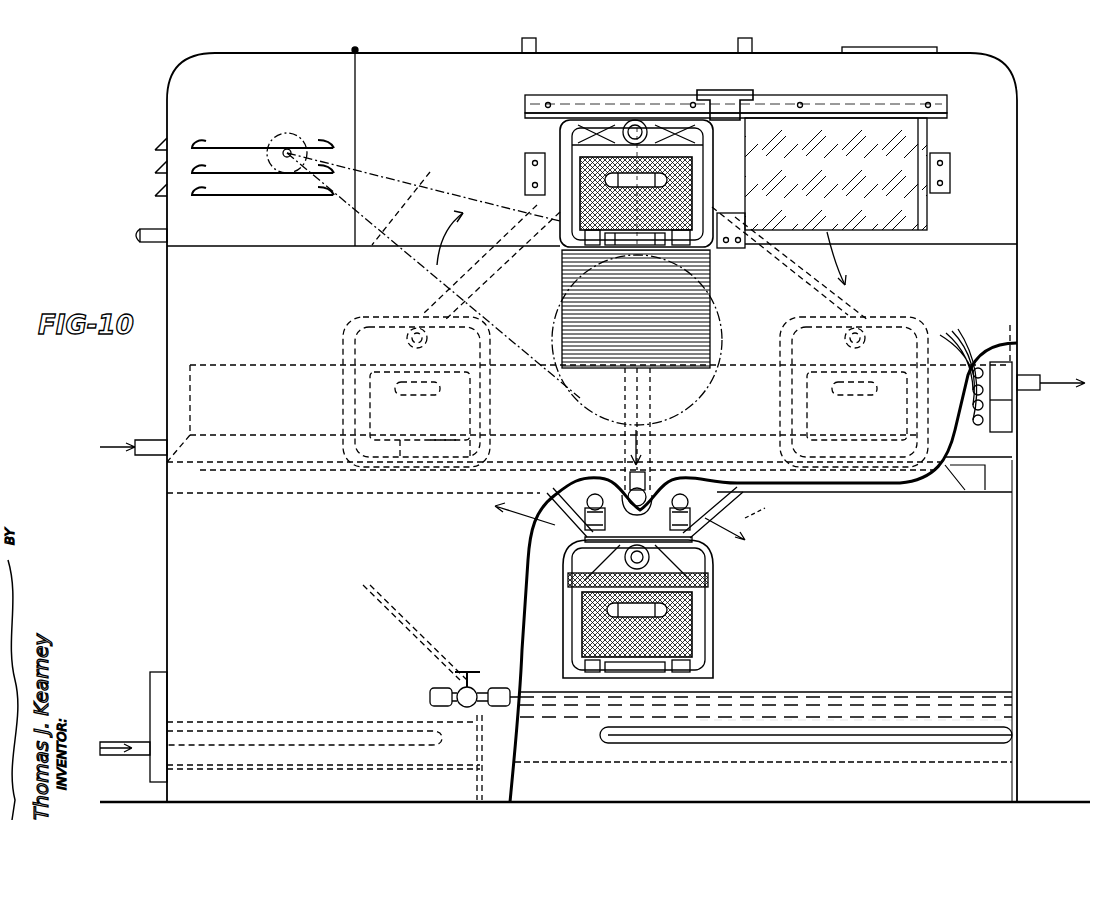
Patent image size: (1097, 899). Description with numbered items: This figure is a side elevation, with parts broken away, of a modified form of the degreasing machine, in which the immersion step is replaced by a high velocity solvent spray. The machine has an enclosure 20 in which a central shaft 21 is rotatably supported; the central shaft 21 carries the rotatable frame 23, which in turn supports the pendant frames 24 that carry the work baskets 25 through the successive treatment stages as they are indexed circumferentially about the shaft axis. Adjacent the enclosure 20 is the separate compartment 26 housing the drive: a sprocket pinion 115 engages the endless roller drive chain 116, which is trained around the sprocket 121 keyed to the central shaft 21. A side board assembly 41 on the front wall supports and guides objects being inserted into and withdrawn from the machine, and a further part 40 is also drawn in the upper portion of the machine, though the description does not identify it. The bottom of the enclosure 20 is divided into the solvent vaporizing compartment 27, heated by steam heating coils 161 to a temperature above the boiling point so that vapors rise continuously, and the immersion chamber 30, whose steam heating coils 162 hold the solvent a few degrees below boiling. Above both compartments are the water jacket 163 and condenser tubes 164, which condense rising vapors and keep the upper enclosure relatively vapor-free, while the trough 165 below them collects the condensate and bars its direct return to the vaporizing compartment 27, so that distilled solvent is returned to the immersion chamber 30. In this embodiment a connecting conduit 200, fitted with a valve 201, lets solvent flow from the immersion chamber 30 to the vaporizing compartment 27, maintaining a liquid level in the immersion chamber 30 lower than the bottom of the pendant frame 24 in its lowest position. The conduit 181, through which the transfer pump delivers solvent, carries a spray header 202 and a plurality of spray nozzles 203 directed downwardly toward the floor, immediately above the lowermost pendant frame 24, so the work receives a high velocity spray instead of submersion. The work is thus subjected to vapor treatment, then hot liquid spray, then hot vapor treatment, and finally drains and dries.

The enclosure 20 is at (1032, 190).
The central shaft 21 is at (560, 305).
The rotatable frame 23 is at (735, 524).
The pendant frame 24 is at (718, 610).
The basket 25 is at (582, 650).
The separate compartment 26 is at (312, 252).
The solvent vaporizing compartment 27 is at (195, 727).
The immersion chamber 30 is at (766, 678).
The glass window 40 is at (900, 88).
The side board assembly 41 is at (715, 360).
The sprocket pinion 115 is at (287, 133).
The roller drive chain 116 is at (620, 246).
The sprocket 121 is at (645, 360).
The steam heating coils 161 is at (378, 735).
The steam heating coils 162 is at (598, 736).
The water jacket 163 is at (1012, 432).
The condenser tubes 164 is at (960, 369).
The trough 165 is at (940, 483).
The conduit 181 is at (622, 475).
The connecting conduit 200 is at (500, 688).
The valve 201 is at (467, 670).
The spray header 202 is at (676, 493).
The spray nozzles 203 is at (580, 530).